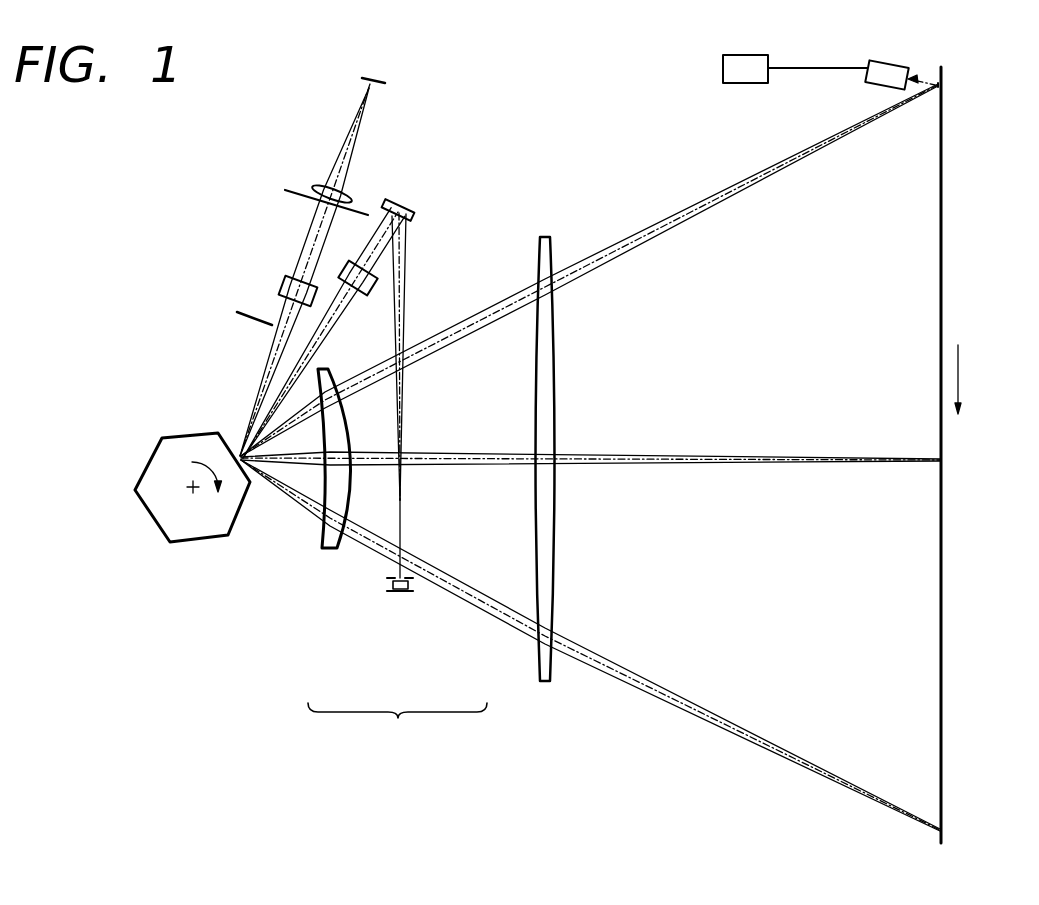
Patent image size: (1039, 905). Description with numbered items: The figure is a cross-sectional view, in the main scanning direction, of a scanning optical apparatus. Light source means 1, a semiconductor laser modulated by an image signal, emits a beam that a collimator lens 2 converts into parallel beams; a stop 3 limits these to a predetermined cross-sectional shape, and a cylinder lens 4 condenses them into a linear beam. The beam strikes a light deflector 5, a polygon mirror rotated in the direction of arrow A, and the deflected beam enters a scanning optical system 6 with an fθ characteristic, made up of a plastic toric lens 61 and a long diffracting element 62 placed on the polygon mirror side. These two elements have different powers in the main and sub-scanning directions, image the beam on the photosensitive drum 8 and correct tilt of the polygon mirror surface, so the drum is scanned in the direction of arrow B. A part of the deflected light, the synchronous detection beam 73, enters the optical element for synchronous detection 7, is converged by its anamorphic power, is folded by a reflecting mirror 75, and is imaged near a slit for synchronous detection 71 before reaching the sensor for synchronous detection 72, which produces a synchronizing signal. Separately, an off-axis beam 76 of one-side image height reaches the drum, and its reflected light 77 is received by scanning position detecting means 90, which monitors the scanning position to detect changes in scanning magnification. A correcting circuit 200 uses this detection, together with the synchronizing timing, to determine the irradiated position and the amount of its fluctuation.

The light source means 1 is at (381, 80).
The collimator lens 2 is at (318, 186).
The stop 3 is at (249, 312).
The cylinder lens 4 is at (283, 278).
The light deflector 5 is at (212, 536).
The scanning optical system 6 is at (397, 727).
The plastic toric lens 61 is at (325, 553).
The long diffracting element 62 is at (540, 665).
The optical element for synchronous detection 7 is at (352, 264).
The slit for synchronous detection 71 is at (387, 578).
The sensor for synchronous detection 72 is at (402, 593).
The synchronous detection beam 73 is at (331, 354).
The reflecting mirror 75 is at (407, 203).
The off-axis beam 76 is at (705, 194).
The reflected light 77 is at (930, 80).
The photosensitive drum 8 is at (942, 557).
The scanning position detecting means 90 is at (882, 61).
The correcting circuit 200 is at (758, 56).